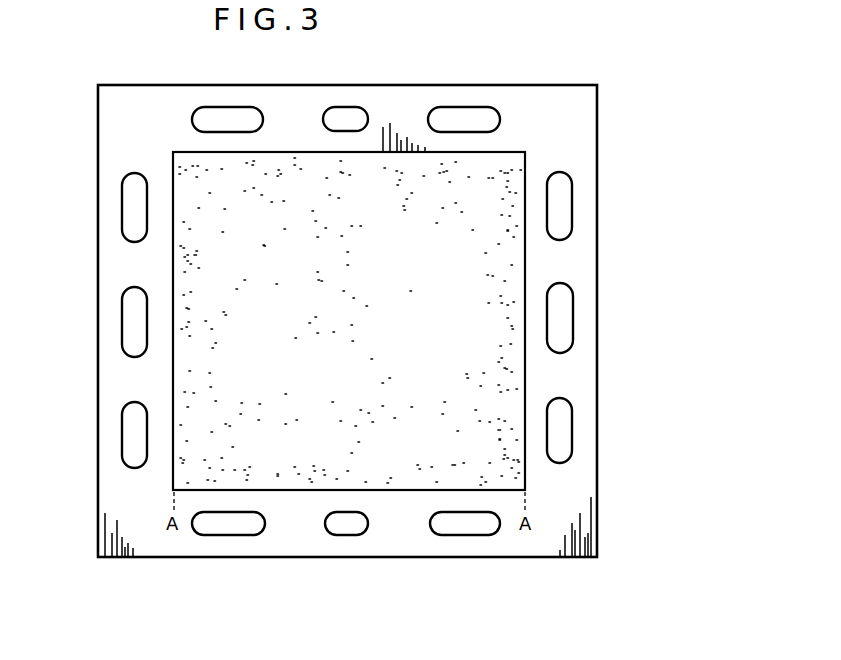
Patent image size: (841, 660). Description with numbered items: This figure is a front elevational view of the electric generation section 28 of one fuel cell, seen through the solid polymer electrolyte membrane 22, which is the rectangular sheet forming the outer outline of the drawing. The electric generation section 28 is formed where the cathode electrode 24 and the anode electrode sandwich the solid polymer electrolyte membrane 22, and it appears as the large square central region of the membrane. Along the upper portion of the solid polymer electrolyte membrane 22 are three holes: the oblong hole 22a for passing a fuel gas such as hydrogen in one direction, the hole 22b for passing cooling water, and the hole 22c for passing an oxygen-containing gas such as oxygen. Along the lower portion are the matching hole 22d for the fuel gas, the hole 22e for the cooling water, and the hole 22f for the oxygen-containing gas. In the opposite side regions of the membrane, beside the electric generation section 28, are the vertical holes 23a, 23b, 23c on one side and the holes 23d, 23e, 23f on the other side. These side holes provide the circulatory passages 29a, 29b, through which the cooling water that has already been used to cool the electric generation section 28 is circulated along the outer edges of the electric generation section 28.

The solid polymer electrolyte membrane 22 is at (557, 98).
The oblong hole 22a is at (476, 114).
The hole 22b is at (345, 118).
The hole 22c is at (229, 118).
The hole 22d is at (236, 530).
The hole 22e is at (352, 527).
The hole 22f is at (470, 528).
The hole 23a is at (568, 213).
The hole 23b is at (563, 303).
The hole 23c is at (567, 437).
The hole 23d is at (132, 203).
The hole 23e is at (130, 305).
The hole 23f is at (130, 438).
The cathode electrode 24 is at (515, 238).
The electric generation section 28 is at (368, 168).
The circulatory passage 29a is at (575, 332).
The circulatory passage 29b is at (122, 339).